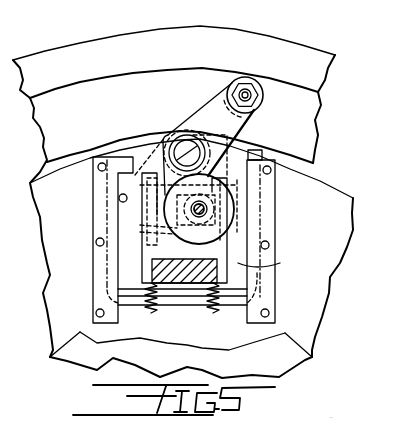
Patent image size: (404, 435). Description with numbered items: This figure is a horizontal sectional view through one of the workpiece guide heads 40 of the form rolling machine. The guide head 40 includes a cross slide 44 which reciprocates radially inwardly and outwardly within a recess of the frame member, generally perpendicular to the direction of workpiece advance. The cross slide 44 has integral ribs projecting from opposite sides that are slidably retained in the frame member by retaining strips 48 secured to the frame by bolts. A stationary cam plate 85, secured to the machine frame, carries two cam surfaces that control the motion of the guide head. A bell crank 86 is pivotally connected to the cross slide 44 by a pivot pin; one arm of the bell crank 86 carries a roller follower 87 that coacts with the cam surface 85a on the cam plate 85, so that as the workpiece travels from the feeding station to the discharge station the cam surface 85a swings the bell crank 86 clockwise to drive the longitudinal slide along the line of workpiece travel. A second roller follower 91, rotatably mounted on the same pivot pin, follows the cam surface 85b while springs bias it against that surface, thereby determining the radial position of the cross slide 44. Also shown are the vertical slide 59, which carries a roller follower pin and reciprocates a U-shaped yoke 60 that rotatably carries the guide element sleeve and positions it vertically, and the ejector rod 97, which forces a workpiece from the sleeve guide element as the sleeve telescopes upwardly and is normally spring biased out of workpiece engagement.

The workpiece guide head 40 is at (190, 219).
The cross slide 44 is at (345, 288).
The retaining strips 48 is at (95, 184).
The vertical slide 59 is at (192, 278).
The U-shaped yoke 60 is at (286, 183).
The cam plate 85 is at (174, 89).
The cam surface 85a is at (165, 69).
The cam surface 85b is at (90, 150).
The bell crank 86 is at (199, 110).
The roller follower 87 is at (263, 101).
The roller follower 91 is at (160, 142).
The ejector rod 97 is at (199, 209).